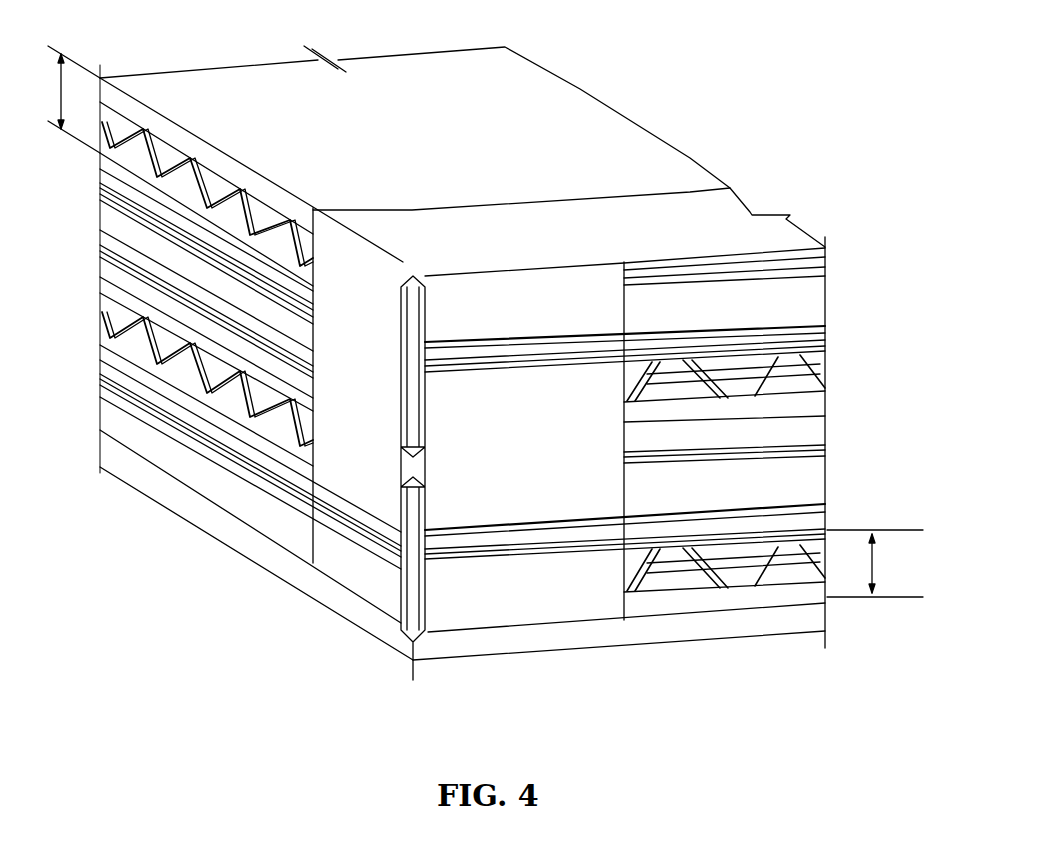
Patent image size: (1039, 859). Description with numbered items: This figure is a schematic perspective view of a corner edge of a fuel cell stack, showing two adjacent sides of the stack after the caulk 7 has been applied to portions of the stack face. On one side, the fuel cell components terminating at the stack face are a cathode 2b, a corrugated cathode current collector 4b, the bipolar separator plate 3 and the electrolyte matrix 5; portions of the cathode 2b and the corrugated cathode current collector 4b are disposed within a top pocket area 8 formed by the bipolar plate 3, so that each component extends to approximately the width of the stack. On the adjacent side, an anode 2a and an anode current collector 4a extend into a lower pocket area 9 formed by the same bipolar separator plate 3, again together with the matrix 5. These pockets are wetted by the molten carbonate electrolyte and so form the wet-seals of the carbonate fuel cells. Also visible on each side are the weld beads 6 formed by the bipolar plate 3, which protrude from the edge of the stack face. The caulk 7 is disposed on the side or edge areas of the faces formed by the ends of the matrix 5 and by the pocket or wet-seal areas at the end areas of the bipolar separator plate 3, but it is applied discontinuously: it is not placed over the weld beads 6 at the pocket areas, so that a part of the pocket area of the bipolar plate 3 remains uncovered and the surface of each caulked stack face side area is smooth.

The anode 2a is at (797, 400).
The cathode 2b is at (158, 122).
The bipolar separator plate 3 is at (127, 231).
The anode current collector 4a is at (752, 373).
The corrugated cathode current collector 4b is at (222, 200).
The electrolyte matrix 5 is at (133, 277).
The weld beads 6 is at (100, 197).
The caulk 7 is at (362, 563).
The top pocket area 8 is at (71, 99).
The lower pocket area 9 is at (875, 563).